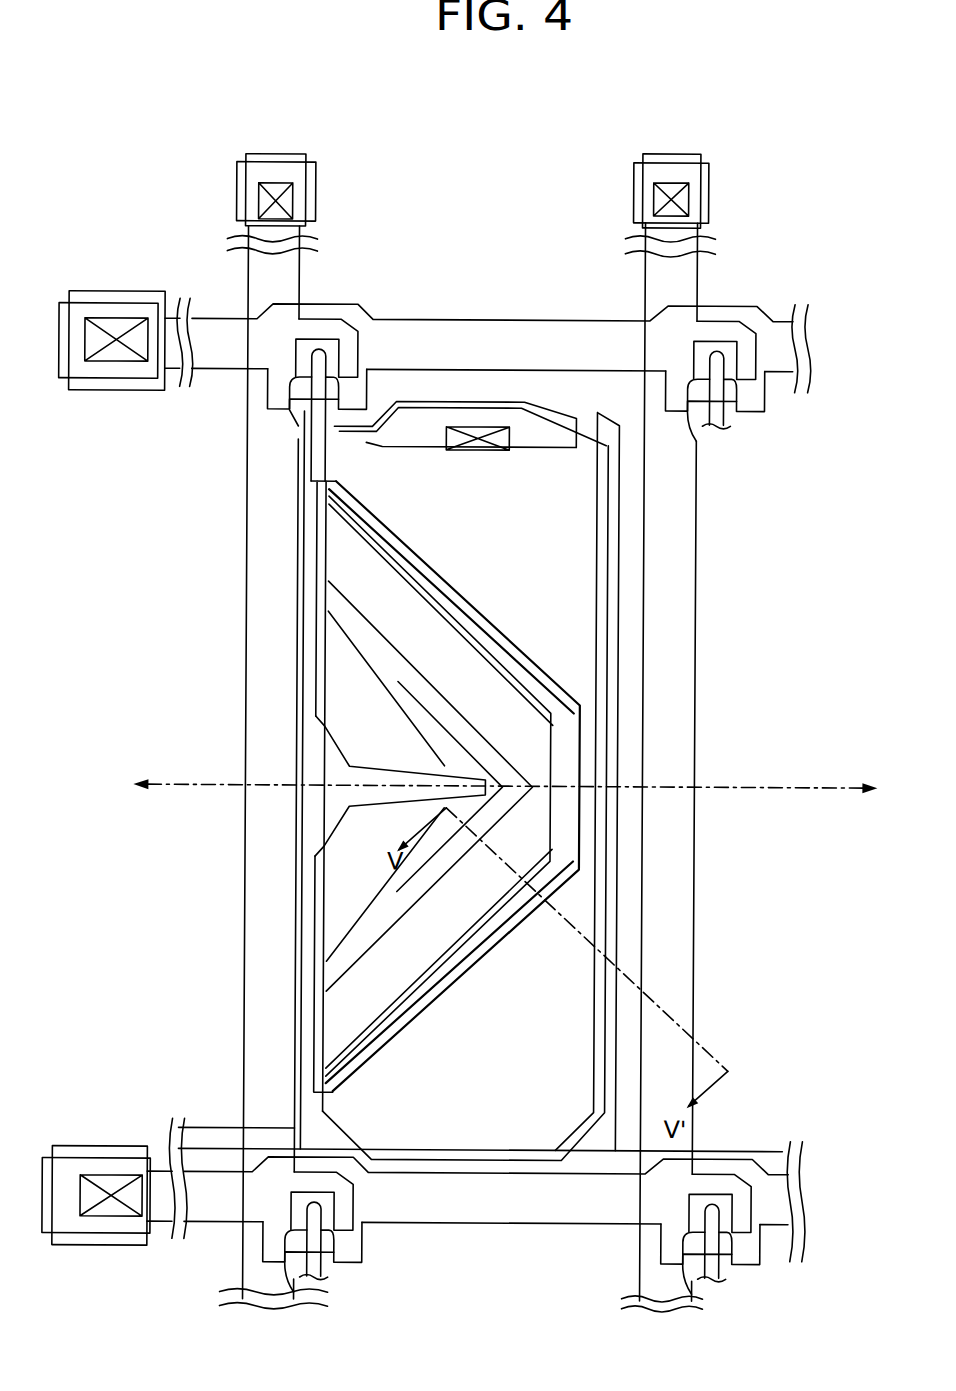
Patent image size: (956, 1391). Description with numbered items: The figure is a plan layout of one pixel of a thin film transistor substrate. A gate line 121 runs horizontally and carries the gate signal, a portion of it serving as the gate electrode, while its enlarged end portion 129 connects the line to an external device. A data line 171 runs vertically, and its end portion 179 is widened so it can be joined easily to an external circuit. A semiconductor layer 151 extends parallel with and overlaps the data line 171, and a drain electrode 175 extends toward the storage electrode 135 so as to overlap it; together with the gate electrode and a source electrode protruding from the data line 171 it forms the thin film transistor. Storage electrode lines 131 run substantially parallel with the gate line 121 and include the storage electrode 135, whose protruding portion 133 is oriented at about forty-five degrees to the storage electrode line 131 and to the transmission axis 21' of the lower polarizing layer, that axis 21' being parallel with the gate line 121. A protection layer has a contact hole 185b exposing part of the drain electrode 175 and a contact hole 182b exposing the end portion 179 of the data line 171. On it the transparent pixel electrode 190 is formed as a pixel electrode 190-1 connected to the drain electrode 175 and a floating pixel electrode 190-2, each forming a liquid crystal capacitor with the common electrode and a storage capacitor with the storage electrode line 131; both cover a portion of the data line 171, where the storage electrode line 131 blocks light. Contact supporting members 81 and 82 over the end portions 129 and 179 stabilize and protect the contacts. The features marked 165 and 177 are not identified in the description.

The gate line 121 is at (326, 1242).
The end portion of the gate line 129 is at (155, 1238).
The contact supporting member 81 is at (98, 1148).
The data line 171 is at (337, 333).
The contact supporting member 82 is at (633, 190).
The end portion of the data line 179 is at (643, 222).
The contact hole 182b is at (688, 198).
The semiconductor layer 151 is at (308, 342).
The drain electrode 175 is at (407, 468).
The storage electrode 165 is at (471, 463).
The contact hole 185b is at (487, 427).
The pixel electrode 190-1 is at (461, 400).
The floating pixel electrode 190-2 is at (320, 652).
The pixel electrode 190 is at (427, 775).
The protruding portion 133 is at (543, 674).
The storage electrode 135 is at (600, 704).
The drain electrode expansion 177 is at (492, 815).
The storage electrode line 131 is at (714, 1157).
The transmission axis 21' is at (496, 758).